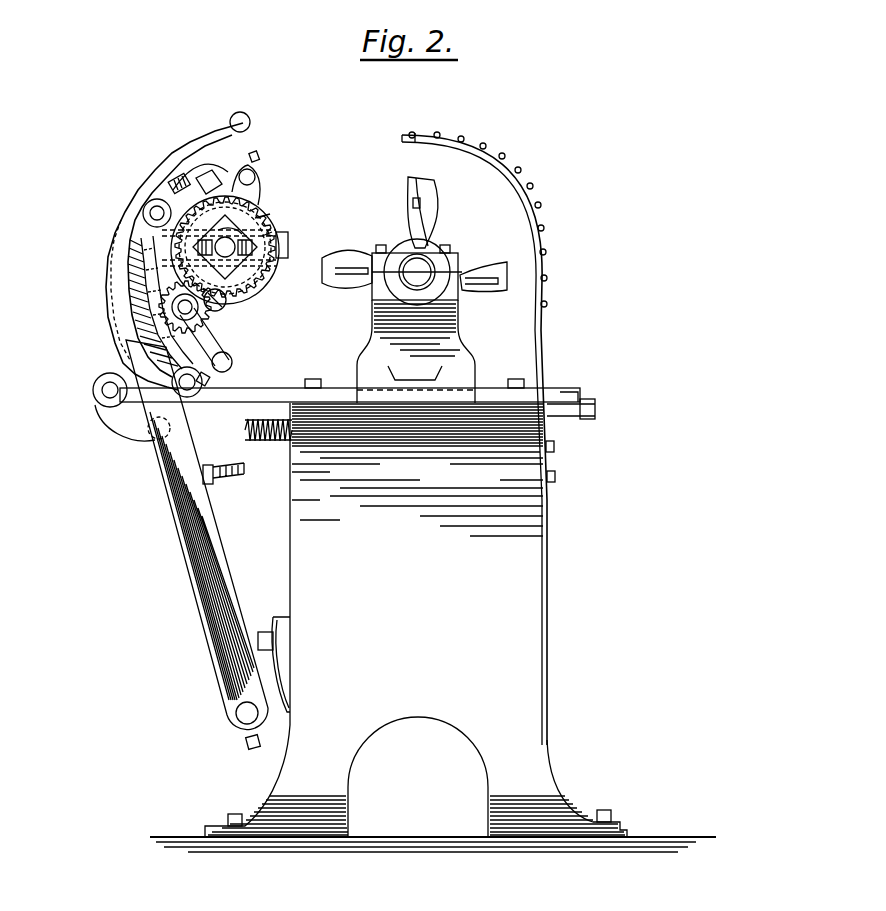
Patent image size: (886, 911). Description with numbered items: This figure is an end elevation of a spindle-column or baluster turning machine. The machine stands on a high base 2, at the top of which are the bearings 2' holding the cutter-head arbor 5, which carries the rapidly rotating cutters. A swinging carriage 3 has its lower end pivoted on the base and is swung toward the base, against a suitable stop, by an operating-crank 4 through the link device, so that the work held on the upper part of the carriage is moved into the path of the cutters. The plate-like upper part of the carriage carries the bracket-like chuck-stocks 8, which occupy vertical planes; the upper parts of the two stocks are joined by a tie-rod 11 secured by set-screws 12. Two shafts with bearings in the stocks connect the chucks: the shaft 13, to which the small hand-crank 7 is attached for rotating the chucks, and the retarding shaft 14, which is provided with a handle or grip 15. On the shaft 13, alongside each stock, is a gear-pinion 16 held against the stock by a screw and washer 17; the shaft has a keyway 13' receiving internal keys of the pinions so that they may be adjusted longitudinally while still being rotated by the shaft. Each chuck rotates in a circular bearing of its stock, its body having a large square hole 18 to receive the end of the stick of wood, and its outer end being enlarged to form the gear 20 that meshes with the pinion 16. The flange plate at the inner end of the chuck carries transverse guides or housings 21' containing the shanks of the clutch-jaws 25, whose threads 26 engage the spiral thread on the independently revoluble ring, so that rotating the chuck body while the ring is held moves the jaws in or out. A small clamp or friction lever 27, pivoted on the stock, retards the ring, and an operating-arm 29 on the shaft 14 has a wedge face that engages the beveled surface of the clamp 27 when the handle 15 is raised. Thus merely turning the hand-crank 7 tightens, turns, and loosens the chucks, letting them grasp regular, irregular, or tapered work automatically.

The high base 2 is at (416, 620).
The bearings 2' is at (416, 351).
The swinging carriage 3 is at (186, 508).
The operating-crank 4 is at (128, 200).
The cutter-head arbor 5 is at (420, 270).
The hand-crank 7 is at (210, 334).
The chuck-stock 8 is at (262, 203).
The tie-rod 11 is at (256, 177).
The set-screws 12 is at (256, 160).
The shaft 13 is at (125, 366).
The keyway 13' is at (147, 375).
The shaft 14 is at (150, 214).
The handle or grip 15 is at (130, 243).
The gear-pinion 16 is at (222, 306).
The screw and washer 17 is at (262, 297).
The square hole 18 is at (220, 219).
The gear 20 is at (262, 221).
The transverse guides or housings 21' is at (300, 245).
The clutch-jaws 25 is at (225, 247).
The threads 26 is at (266, 238).
The clamp or friction lever 27 is at (216, 182).
The operating-arm 29 is at (176, 190).